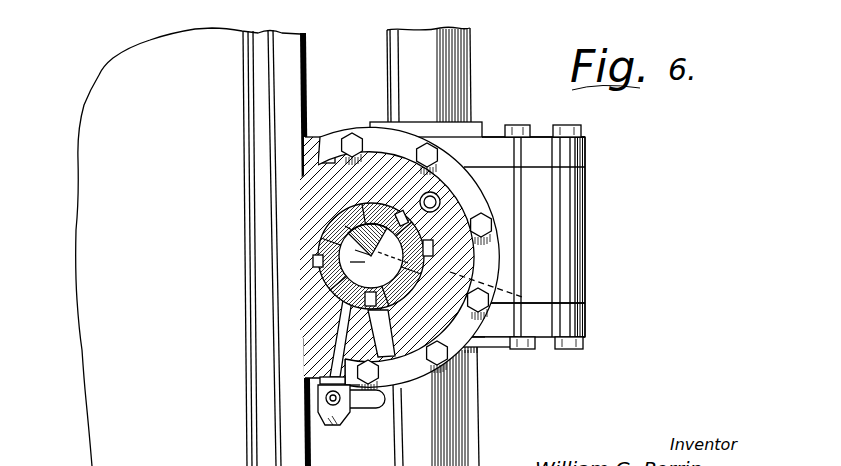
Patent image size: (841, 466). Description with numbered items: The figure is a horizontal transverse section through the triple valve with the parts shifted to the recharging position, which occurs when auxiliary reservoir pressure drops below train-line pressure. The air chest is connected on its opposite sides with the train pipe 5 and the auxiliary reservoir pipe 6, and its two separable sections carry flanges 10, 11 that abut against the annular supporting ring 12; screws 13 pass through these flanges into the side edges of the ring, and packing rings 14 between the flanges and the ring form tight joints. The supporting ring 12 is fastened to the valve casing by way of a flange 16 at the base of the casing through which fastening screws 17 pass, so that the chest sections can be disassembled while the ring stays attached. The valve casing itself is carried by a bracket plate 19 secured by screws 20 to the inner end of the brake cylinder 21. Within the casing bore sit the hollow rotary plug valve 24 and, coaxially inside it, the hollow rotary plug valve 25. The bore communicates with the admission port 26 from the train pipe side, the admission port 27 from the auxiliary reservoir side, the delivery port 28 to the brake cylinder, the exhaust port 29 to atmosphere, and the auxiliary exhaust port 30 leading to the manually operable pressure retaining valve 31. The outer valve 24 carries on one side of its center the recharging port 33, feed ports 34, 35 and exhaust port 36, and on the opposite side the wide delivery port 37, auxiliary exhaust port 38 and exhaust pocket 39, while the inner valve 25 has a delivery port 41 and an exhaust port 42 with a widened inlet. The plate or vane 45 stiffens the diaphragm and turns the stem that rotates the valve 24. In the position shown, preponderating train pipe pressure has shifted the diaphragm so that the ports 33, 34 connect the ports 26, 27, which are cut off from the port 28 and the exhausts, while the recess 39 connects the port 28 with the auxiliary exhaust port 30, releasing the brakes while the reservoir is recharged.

The train pipe 5 is at (462, 80).
The auxiliary reservoir pipe 6 is at (455, 428).
The flange 10 is at (586, 320).
The flange 11 is at (585, 155).
The supporting ring 12 is at (577, 247).
The screws 13 is at (579, 125).
The packing rings 14 is at (585, 302).
The flange 16 is at (386, 137).
The fastening screws 17 is at (494, 233).
The bracket plate 19 is at (316, 137).
The screws 20 is at (494, 384).
The brake cylinder 21 is at (236, 338).
The hollow rotary plug valve 24 is at (350, 195).
The hollow rotary plug valve 25 is at (318, 252).
The admission port 26 is at (438, 175).
The admission port 27 is at (439, 200).
The delivery port 28 is at (312, 266).
The exhaust port 29 is at (392, 360).
The auxiliary exhaust port 30 is at (322, 364).
The pressure retaining valve 31 is at (350, 424).
The recharging port 33 is at (397, 165).
The feed port 34 is at (480, 329).
The feed port 35 is at (432, 312).
The exhaust port 36 is at (367, 394).
The delivery port 37 is at (342, 224).
The auxiliary exhaust port 38 is at (317, 262).
The exhaust pocket 39 is at (330, 318).
The delivery port 41 is at (358, 245).
The exhaust port 42 is at (352, 268).
The plate or vane 45 is at (479, 217).